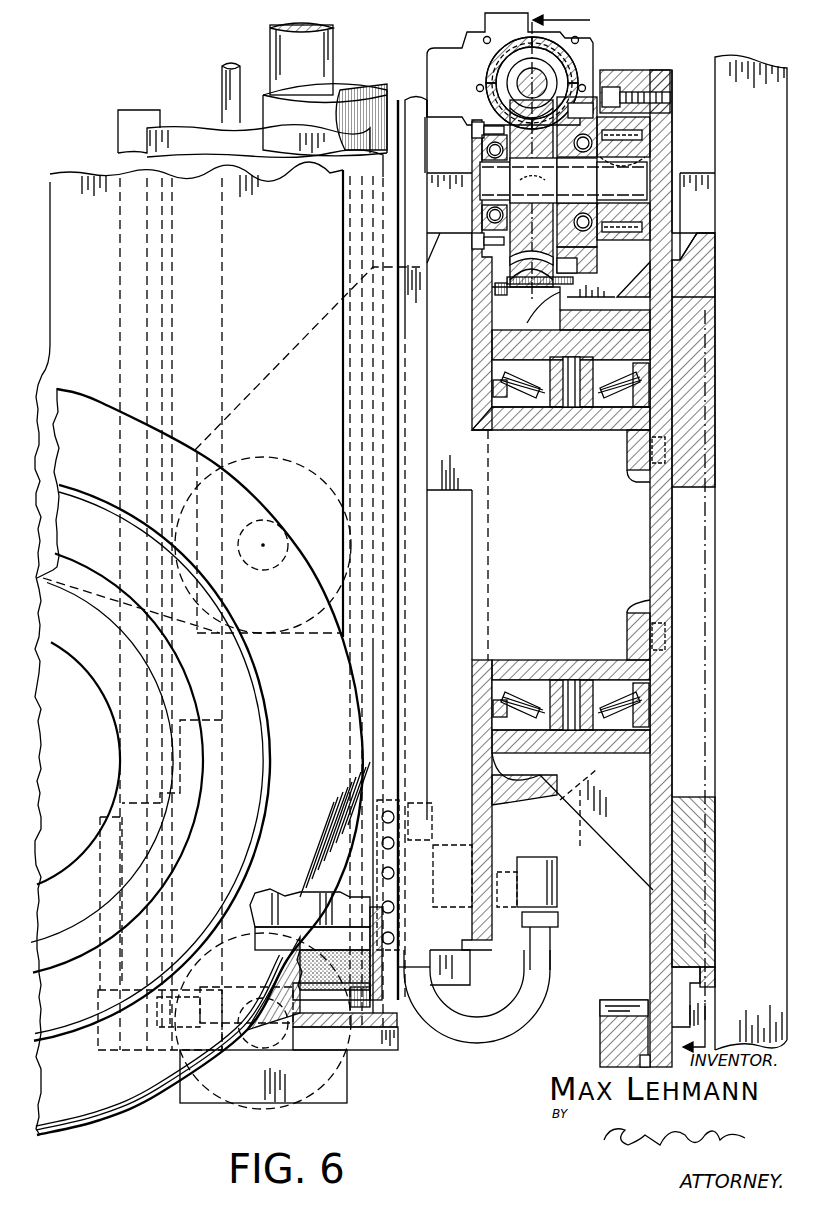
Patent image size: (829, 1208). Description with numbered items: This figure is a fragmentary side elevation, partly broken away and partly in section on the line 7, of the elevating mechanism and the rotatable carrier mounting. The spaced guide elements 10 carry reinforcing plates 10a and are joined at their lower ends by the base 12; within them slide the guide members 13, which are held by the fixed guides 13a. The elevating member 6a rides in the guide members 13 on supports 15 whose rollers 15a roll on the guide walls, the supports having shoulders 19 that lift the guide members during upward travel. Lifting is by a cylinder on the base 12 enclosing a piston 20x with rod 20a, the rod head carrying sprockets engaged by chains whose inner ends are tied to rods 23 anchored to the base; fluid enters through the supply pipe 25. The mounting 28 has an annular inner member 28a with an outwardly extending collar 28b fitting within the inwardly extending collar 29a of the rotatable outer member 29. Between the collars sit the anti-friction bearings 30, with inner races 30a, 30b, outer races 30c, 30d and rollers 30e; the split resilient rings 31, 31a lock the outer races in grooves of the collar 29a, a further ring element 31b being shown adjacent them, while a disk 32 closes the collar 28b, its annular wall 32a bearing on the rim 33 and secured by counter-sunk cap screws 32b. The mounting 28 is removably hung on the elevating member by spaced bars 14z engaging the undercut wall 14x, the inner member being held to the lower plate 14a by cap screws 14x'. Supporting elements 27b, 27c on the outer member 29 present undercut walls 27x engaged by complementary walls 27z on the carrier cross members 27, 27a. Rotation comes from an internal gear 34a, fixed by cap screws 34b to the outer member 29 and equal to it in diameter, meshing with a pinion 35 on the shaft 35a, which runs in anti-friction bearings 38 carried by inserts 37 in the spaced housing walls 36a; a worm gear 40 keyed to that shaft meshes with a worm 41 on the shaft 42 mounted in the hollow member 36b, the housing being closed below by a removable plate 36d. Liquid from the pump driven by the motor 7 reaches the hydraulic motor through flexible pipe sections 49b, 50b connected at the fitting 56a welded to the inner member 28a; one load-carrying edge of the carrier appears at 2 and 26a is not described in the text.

The wheel rim 2 is at (118, 1116).
The elevating member 6a is at (449, 559).
The motor 7 is at (637, 533).
The guide elements 10 is at (120, 160).
The reinforcing plates 10a is at (50, 182).
The base 12 is at (322, 1048).
The guide members 13 is at (185, 130).
The guides 13a is at (150, 252).
The lower plate 14a is at (455, 985).
The wall 14x is at (436, 549).
The cap screws 14x' is at (429, 900).
The spaced bars 14z is at (463, 172).
The supports 15 is at (300, 356).
The rollers 15a is at (296, 1118).
The shoulders 19 is at (185, 716).
The rod 20a is at (298, 906).
The piston 20x is at (268, 936).
The rods 23 is at (226, 76).
The supply pipe 25 is at (195, 1030).
The wall 26a is at (763, 893).
The cross member 27 is at (700, 196).
The cross member 27a is at (702, 1006).
The supporting element 27b is at (716, 286).
The supporting element 27c is at (697, 838).
The undercut projecting walls 27x is at (706, 241).
The complementary walls 27z is at (716, 259).
The mounting 28 is at (633, 952).
The inner member 28a is at (485, 960).
The collar 28b is at (532, 656).
The outer member 29 is at (650, 906).
The collar 29a is at (598, 761).
The anti-friction bearings 30 is at (552, 432).
The inner race 30a is at (548, 656).
The inner race 30b is at (670, 681).
The outer race 30c is at (462, 741).
The outer race 30d is at (675, 745).
The anti-friction rollers 30e is at (660, 709).
The split resilient ring 31 is at (562, 739).
The split resilient ring 31a is at (585, 453).
The washer 31b is at (610, 481).
The disk 32 is at (655, 548).
The annular wall 32a is at (630, 611).
The counter-sunk cap screws 32b is at (612, 631).
The circumferential rim 33 is at (620, 493).
The internal gear 34a is at (641, 72).
The counter-sunk cap screws 34b is at (670, 101).
The pinion 35 is at (627, 229).
The shaft 35a is at (636, 184).
The housing walls 36a is at (578, 276).
The hollow member 36b is at (603, 69).
The removable plate 36d is at (519, 286).
The inserts 37 is at (477, 206).
The anti-friction bearings 38 is at (475, 139).
The worm gear 40 is at (577, 300).
The worm 41 is at (510, 79).
The shaft 42 is at (590, 59).
The outer pipe section 49b is at (406, 97).
The outer pipe section 50b is at (493, 1041).
The fitting 56a is at (545, 868).